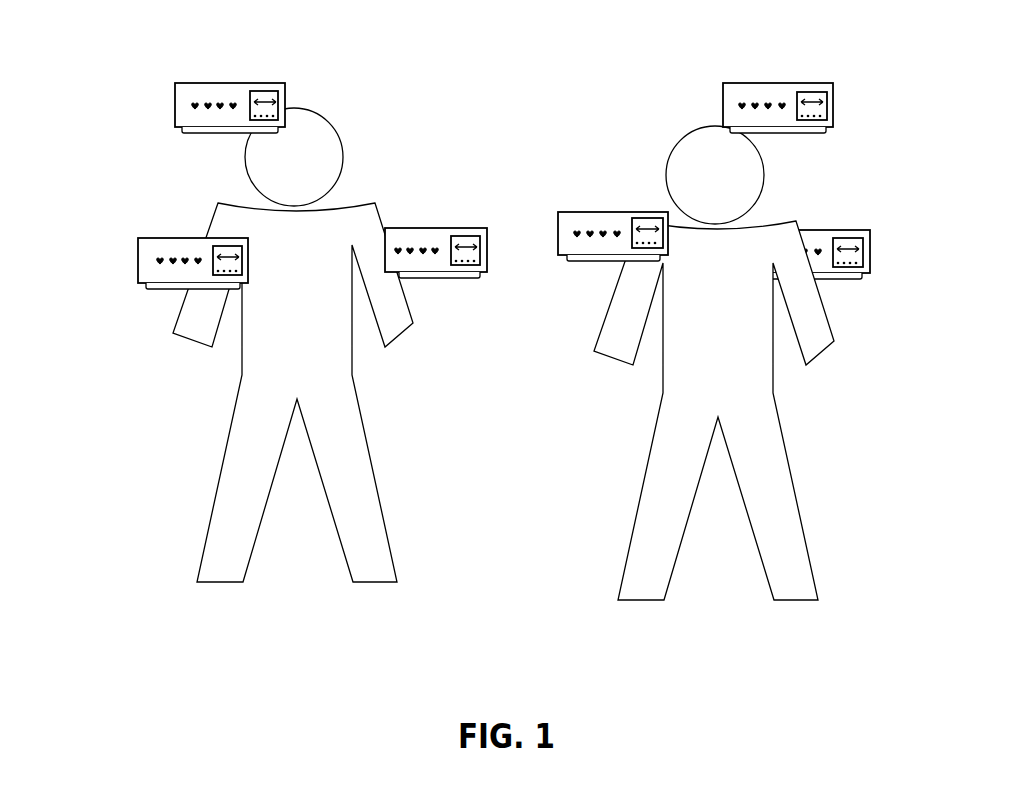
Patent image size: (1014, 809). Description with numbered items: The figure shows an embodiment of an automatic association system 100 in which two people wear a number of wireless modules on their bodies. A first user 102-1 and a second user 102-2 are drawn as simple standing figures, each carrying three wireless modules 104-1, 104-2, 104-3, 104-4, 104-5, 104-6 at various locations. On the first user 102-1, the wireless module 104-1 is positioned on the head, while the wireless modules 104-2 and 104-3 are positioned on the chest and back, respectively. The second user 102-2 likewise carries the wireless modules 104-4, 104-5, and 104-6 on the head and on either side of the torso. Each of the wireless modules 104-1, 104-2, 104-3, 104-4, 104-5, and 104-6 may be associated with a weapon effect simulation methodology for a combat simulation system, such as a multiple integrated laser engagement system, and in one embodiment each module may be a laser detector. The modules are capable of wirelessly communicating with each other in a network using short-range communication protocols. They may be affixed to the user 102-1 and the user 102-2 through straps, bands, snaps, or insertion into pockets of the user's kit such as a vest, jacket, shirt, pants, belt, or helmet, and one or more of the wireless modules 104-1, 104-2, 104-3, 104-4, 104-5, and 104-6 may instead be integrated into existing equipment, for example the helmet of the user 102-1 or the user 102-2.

The automatic association system 100 is at (548, 92).
The user 102-1 is at (337, 135).
The user 102-2 is at (673, 135).
The wireless module 104-1 is at (287, 83).
The wireless module 104-2 is at (138, 253).
The wireless module 104-3 is at (443, 225).
The wireless module 104-4 is at (833, 102).
The wireless module 104-5 is at (583, 267).
The wireless module 104-6 is at (870, 233).